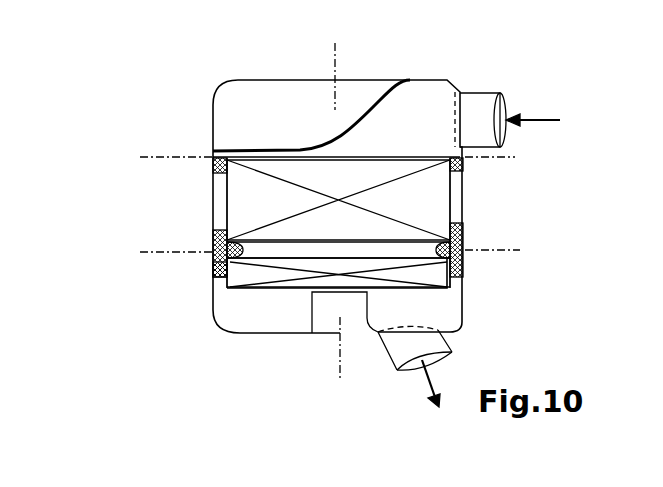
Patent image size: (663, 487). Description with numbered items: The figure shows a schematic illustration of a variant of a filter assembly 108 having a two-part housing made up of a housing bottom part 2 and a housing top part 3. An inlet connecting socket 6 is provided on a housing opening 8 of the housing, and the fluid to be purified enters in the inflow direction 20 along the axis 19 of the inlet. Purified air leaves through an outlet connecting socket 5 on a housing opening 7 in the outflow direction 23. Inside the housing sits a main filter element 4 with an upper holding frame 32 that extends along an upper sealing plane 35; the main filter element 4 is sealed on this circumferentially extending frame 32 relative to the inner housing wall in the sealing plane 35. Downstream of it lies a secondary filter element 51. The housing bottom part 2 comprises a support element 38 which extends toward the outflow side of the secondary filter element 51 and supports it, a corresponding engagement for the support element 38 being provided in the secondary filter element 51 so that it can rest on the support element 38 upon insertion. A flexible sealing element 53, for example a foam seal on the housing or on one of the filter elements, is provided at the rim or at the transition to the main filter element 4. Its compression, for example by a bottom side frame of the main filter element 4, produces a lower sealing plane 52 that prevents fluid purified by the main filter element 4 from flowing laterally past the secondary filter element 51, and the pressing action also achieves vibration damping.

The filter assembly 108 is at (208, 89).
The housing top part 3 is at (260, 97).
The axis of inlet 19 is at (335, 48).
The housing opening 8 is at (453, 108).
The inlet connecting socket 6 is at (478, 105).
The inflow direction 20 is at (543, 117).
The upper sealing plane 35 is at (167, 155).
The upper holding frame 32 is at (213, 168).
The main filter element 4 is at (435, 205).
The flexible sealing element 53 is at (220, 245).
The lower sealing plane 52 is at (150, 255).
The secondary filter element 51 is at (225, 298).
The housing bottom part 2 is at (250, 318).
The support element 38 is at (323, 318).
The outlet connecting socket 5 is at (400, 352).
The housing opening 7 is at (428, 326).
The outflow direction 23 is at (418, 385).